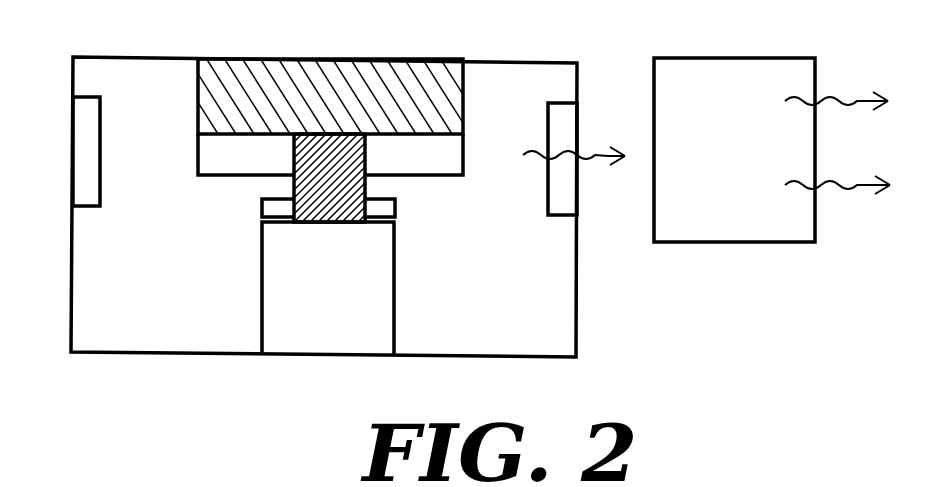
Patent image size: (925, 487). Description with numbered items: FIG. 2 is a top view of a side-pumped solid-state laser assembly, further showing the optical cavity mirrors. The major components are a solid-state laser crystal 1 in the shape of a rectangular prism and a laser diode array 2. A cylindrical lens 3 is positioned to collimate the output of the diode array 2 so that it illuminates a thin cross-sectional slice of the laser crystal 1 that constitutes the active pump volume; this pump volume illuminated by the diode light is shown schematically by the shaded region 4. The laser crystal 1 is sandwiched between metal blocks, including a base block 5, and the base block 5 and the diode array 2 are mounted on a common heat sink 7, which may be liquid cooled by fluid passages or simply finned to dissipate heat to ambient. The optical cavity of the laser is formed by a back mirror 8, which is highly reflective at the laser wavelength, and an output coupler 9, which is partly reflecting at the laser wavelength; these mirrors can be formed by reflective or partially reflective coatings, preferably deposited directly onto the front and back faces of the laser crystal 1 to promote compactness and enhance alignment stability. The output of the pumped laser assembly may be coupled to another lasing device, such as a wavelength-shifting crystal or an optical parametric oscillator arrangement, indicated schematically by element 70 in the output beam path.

The solid-state laser crystal 1 is at (225, 153).
The laser diode array 2 is at (397, 272).
The cylindrical lens 3 is at (262, 204).
The shaded region (pump volume) 4 is at (356, 145).
The base block 5 is at (105, 267).
The heat sink 7 is at (320, 87).
The back mirror 8 is at (80, 108).
The output coupler 9 is at (567, 173).
The lasing device (element 70) 70 is at (723, 242).